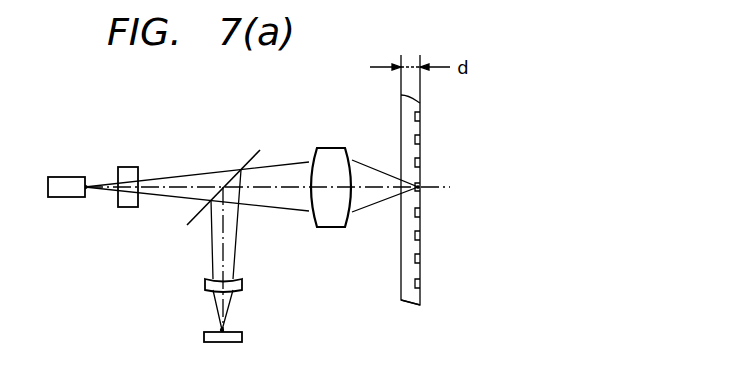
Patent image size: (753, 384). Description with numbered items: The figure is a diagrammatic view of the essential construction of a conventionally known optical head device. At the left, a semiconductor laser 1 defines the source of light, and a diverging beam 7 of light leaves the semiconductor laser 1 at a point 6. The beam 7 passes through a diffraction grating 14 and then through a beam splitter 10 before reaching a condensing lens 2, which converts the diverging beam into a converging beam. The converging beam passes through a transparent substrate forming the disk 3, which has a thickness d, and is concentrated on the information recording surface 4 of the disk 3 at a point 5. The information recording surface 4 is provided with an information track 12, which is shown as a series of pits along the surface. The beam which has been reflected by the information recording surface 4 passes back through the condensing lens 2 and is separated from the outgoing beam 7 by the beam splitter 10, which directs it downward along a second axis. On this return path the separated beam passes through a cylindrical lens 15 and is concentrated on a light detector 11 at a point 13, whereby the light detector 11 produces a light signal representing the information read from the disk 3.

The semiconductor laser 1 is at (63, 198).
The point 6 is at (87, 184).
The diffraction grating 14 is at (128, 167).
The beam 7 is at (195, 175).
The beam splitter 10 is at (252, 158).
The condensing lens 2 is at (350, 153).
The disk 3 is at (400, 293).
The information recording surface 4 is at (413, 306).
The information track 12 is at (422, 213).
The point 5 is at (422, 185).
The cylindrical lens 15 is at (243, 281).
The point 13 is at (225, 328).
The light detector 11 is at (243, 338).